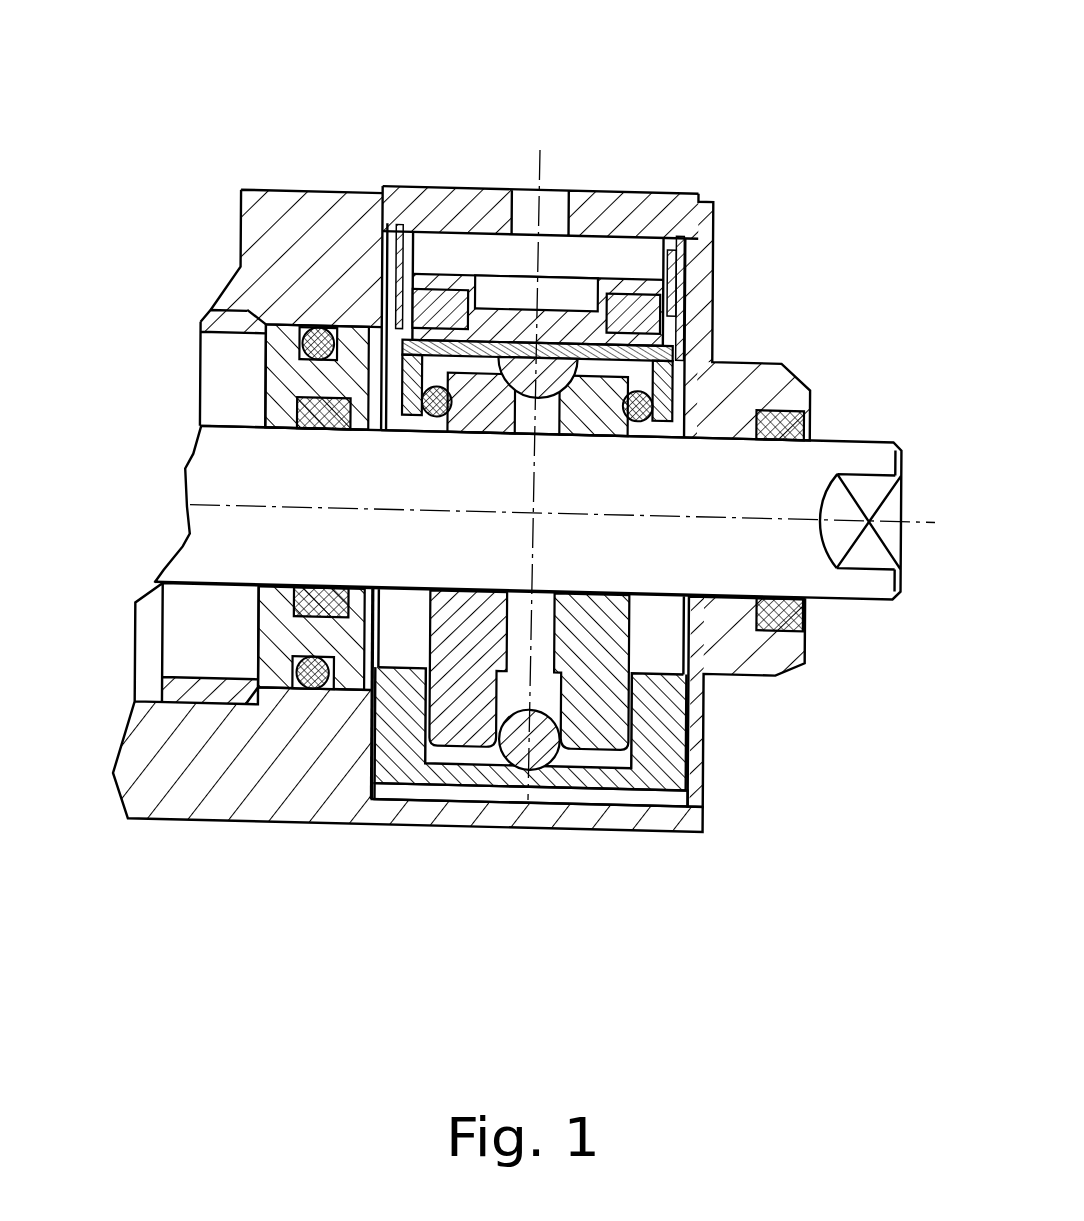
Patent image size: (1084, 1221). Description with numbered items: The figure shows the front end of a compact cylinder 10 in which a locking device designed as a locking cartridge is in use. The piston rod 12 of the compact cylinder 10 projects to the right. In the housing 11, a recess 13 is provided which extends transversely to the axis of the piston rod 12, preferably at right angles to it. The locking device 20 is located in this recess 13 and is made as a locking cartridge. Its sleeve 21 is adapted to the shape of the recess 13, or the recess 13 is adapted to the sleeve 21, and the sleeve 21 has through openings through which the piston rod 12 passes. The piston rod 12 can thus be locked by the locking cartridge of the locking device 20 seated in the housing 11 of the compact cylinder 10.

The compact cylinder 10 is at (188, 370).
The housing 11 is at (270, 245).
The piston rod 12 is at (208, 547).
The recess 13 is at (412, 790).
The locking device 20 is at (577, 170).
The sleeve 21 is at (595, 200).